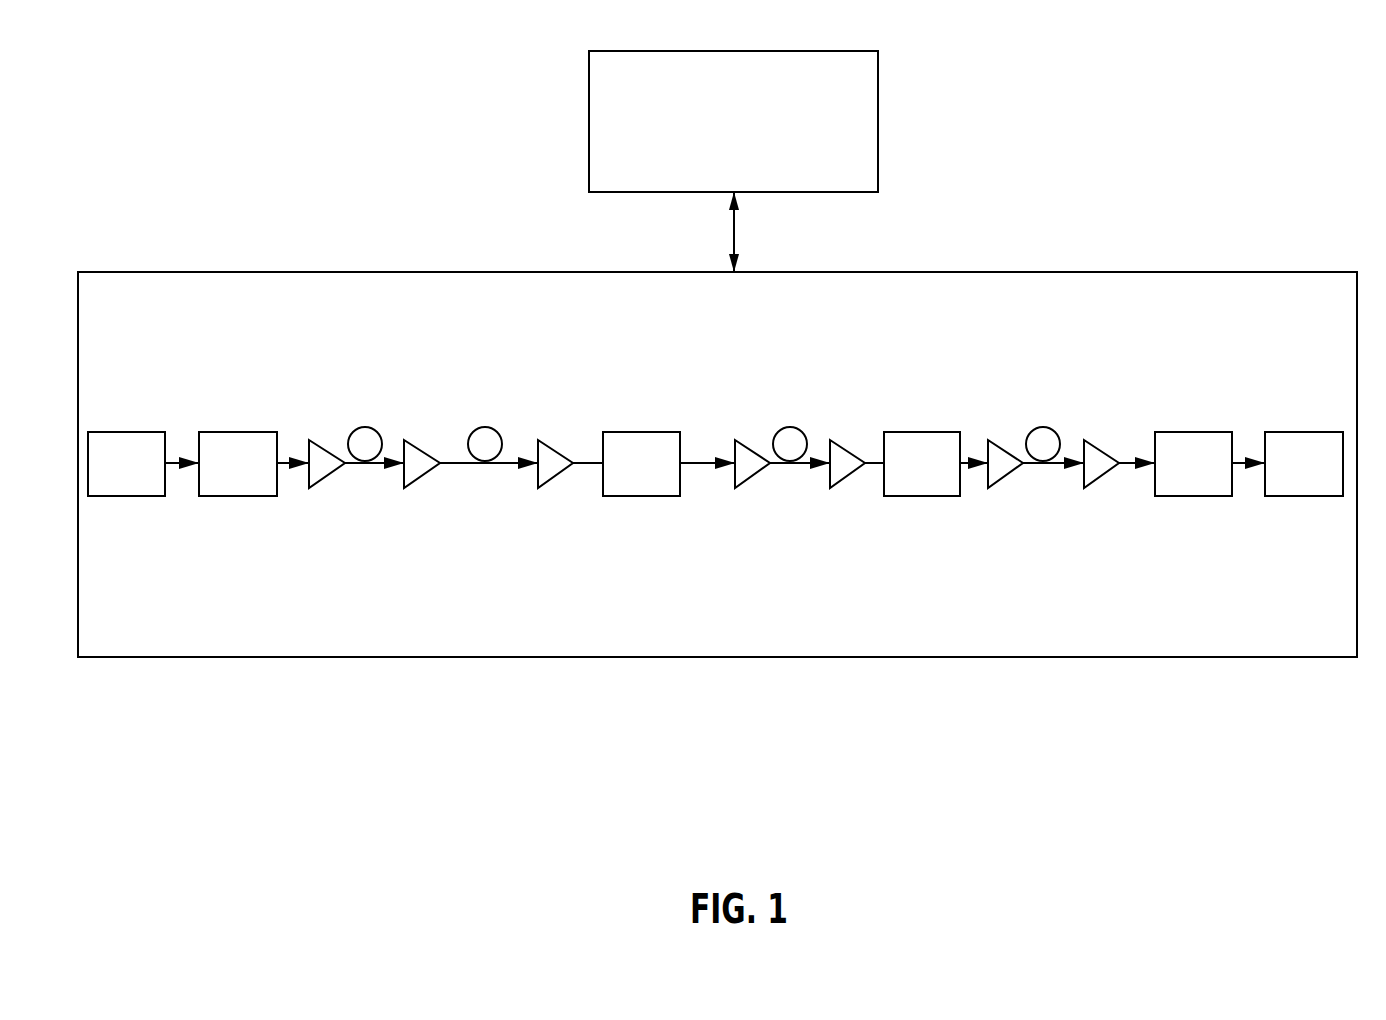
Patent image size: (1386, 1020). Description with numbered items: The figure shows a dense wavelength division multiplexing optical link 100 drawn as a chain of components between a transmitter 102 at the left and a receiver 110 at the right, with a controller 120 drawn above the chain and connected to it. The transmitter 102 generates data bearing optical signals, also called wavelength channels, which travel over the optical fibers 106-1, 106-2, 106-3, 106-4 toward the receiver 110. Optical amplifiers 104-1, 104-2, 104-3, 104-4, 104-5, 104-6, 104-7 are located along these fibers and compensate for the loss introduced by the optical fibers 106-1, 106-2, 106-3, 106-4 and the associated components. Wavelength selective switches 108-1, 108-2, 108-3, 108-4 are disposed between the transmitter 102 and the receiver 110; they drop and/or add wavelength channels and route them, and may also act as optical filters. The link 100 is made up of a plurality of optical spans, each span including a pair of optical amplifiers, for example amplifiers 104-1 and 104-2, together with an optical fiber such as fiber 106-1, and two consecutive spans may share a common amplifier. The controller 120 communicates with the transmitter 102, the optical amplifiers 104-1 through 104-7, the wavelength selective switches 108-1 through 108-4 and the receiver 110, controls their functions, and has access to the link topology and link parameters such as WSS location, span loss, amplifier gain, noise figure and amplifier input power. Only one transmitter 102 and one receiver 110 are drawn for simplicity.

The DWDM optical link 100 is at (152, 50).
The transmitter 102 is at (115, 427).
The optical amplifier 104-1 is at (326, 481).
The optical amplifier 104-2 is at (422, 481).
The optical amplifier 104-3 is at (556, 481).
The optical amplifier 104-4 is at (752, 481).
The optical amplifier 104-5 is at (848, 481).
The optical amplifier 104-6 is at (1005, 481).
The optical amplifier 104-7 is at (1102, 481).
The optical fiber 106-1 is at (357, 425).
The optical fiber 106-2 is at (480, 425).
The optical fiber 106-3 is at (780, 425).
The optical fiber 106-4 is at (1038, 425).
The wavelength selective switch 108-1 is at (230, 427).
The wavelength selective switch 108-2 is at (640, 427).
The wavelength selective switch 108-3 is at (913, 427).
The wavelength selective switch 108-4 is at (1188, 427).
The receiver 110 is at (1300, 427).
The controller 120 is at (709, 158).